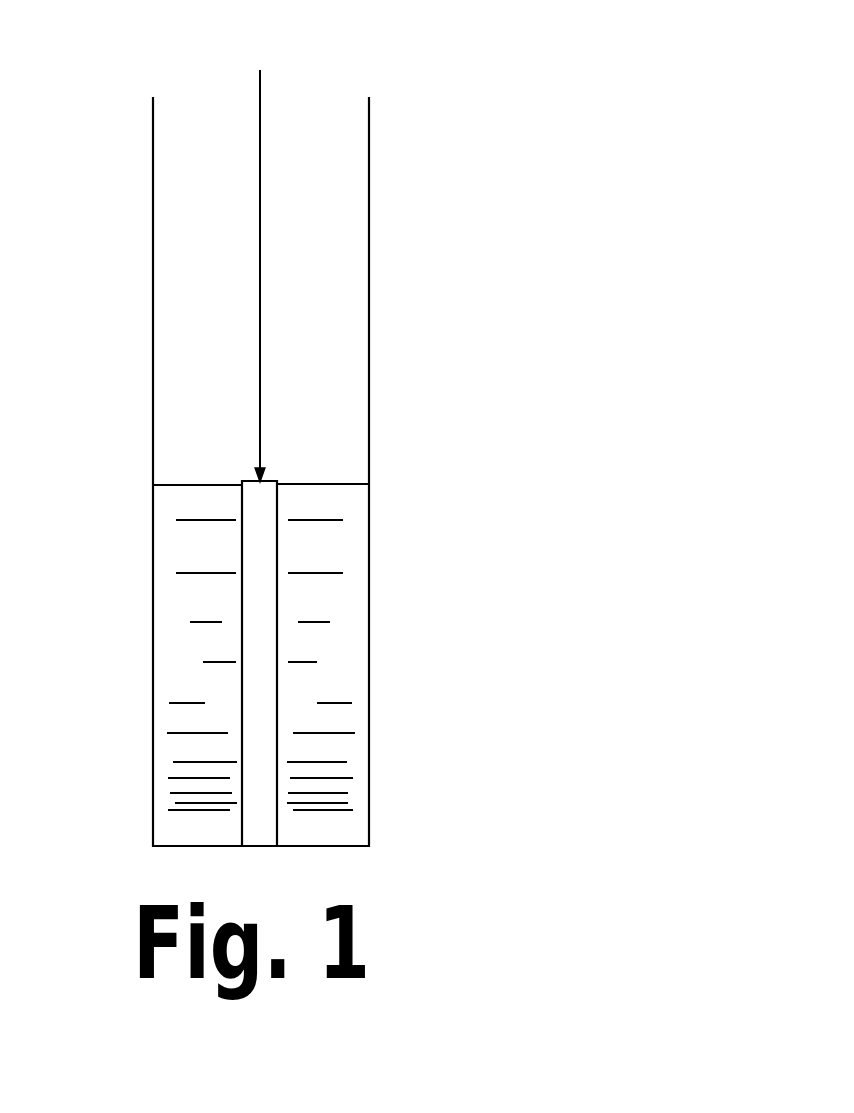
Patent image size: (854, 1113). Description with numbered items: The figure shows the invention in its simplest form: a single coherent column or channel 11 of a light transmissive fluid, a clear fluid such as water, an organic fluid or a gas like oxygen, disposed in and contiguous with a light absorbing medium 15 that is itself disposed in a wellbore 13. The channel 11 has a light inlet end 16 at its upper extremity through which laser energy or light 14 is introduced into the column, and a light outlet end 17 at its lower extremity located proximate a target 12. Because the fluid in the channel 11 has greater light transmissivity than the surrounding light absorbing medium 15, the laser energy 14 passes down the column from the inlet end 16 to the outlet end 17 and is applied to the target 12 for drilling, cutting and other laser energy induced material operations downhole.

The column or channel of light transmissive fluid 11 is at (220, 487).
The target 12 is at (336, 846).
The wellbore 13 is at (369, 293).
The laser energy or light 14 is at (260, 145).
The light absorbing medium 15 is at (358, 608).
The light inlet end 16 is at (277, 484).
The light outlet end 17 is at (236, 840).